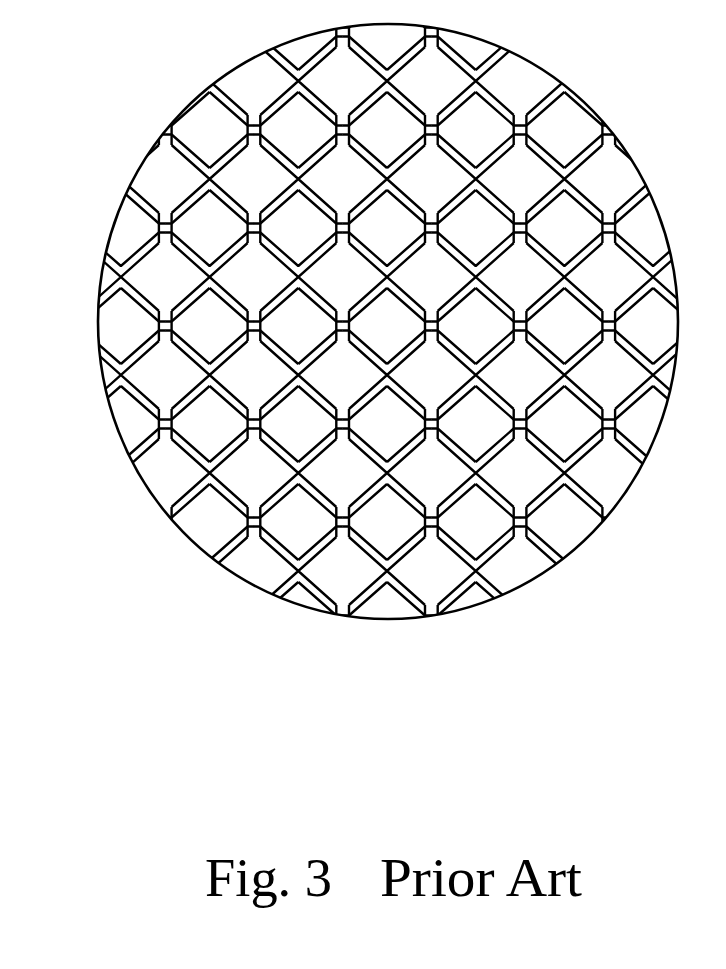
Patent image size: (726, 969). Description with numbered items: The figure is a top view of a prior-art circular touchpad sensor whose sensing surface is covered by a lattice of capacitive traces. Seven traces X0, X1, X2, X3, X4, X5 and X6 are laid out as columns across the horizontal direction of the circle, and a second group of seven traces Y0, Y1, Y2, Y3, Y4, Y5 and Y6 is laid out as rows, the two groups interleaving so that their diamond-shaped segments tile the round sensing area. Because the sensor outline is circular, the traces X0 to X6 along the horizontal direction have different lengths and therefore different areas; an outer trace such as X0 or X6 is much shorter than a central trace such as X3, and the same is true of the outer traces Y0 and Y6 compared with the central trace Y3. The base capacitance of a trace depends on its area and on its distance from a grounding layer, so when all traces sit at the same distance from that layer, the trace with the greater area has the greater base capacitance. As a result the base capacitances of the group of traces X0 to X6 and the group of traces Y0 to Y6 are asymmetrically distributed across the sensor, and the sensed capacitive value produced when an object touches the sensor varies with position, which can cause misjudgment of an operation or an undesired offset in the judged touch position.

The trace X0 is at (121, 330).
The trace X1 is at (210, 330).
The trace X2 is at (298, 330).
The trace X3 is at (387, 330).
The trace X4 is at (476, 330).
The trace X5 is at (564, 330).
The trace X6 is at (653, 330).
The trace Y0 is at (374, 620).
The trace Y1 is at (374, 522).
The trace Y2 is at (374, 424).
The trace Y3 is at (374, 326).
The trace Y4 is at (374, 228).
The trace Y5 is at (374, 130).
The trace Y6 is at (374, 42).